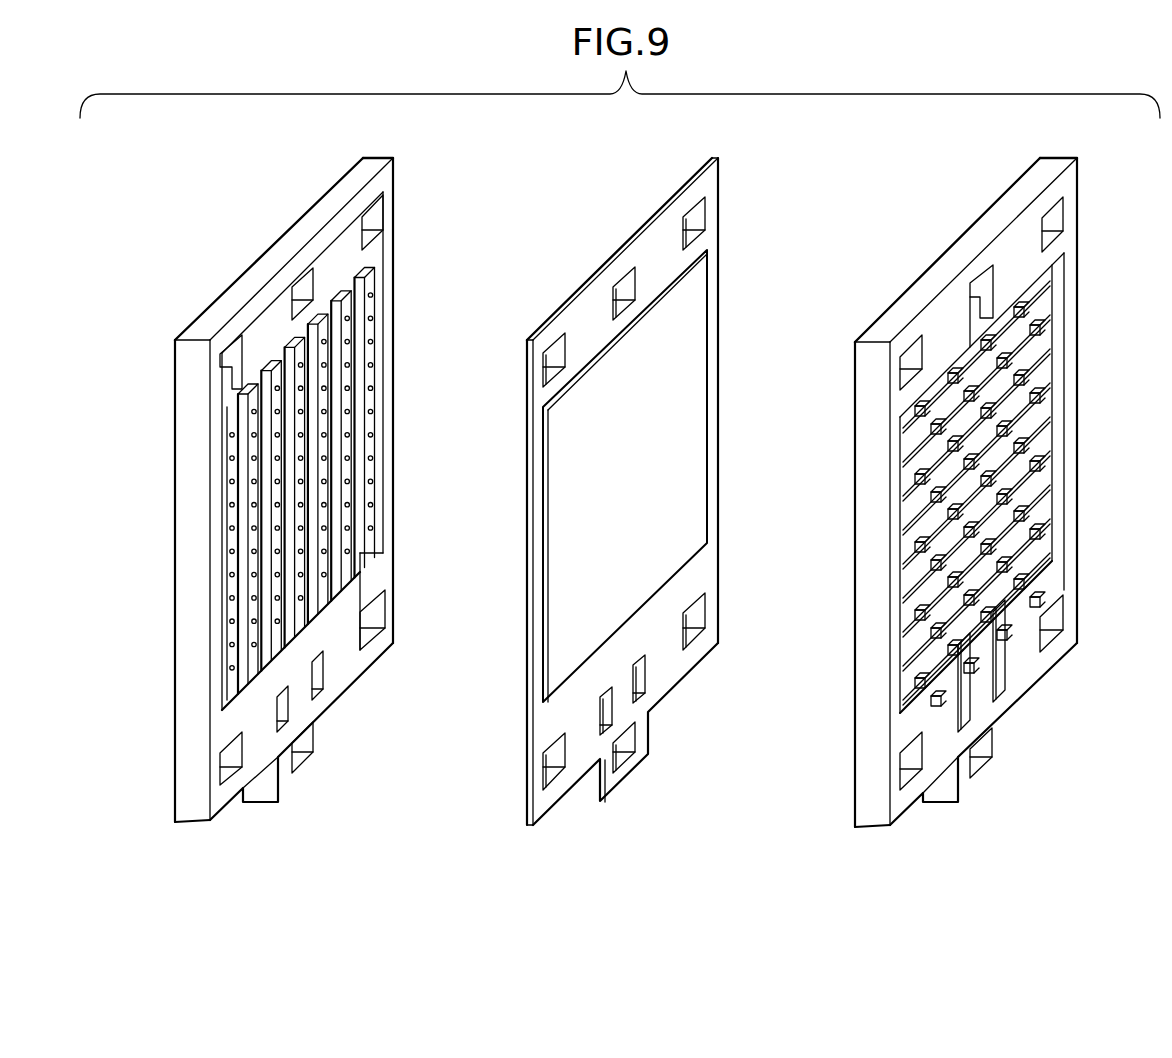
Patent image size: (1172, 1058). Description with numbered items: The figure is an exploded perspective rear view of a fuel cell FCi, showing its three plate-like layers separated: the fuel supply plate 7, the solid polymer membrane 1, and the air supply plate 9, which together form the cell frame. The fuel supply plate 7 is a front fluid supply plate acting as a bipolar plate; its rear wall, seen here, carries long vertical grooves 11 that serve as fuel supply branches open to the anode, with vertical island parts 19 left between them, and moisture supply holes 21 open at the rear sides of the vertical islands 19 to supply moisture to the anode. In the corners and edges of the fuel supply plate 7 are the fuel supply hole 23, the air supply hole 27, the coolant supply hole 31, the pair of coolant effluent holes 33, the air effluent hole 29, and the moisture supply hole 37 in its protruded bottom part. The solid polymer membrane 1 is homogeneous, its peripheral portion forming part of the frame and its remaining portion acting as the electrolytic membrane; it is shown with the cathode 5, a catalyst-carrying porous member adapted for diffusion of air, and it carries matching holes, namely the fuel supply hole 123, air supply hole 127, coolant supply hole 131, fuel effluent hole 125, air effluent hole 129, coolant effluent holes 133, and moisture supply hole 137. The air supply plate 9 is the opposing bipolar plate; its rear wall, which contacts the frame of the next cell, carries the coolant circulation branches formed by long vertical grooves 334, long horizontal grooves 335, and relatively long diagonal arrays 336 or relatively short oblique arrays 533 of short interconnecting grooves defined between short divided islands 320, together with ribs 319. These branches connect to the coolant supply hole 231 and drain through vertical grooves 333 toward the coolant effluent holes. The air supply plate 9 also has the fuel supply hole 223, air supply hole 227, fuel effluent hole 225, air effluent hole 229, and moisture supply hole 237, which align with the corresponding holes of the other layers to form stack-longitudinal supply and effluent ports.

The fuel cell FCi is at (190, 218).
The fuel supply plate 7 is at (262, 250).
The coolant supply hole 31 is at (300, 268).
The air supply hole 27 is at (380, 218).
The vertical island part 19 is at (228, 492).
The long vertical groove 11 is at (220, 560).
The moisture supply hole 21 is at (228, 640).
The fuel supply hole 23 is at (375, 622).
The coolant effluent hole 33 is at (318, 688).
The moisture supply hole 37 is at (300, 750).
The air effluent hole 29 is at (226, 770).
The solid polymer membrane 1 is at (590, 268).
The cathode 5 is at (724, 282).
The fuel effluent hole 125 is at (557, 360).
The coolant supply hole 131 is at (624, 292).
The air supply hole 127 is at (692, 232).
The air effluent hole 129 is at (552, 775).
The fuel supply hole 123 is at (698, 625).
The coolant effluent hole 133 is at (642, 680).
The moisture supply hole 137 is at (628, 752).
The air supply plate 9 is at (966, 220).
The rib 319 is at (1047, 318).
The short divided island 320 is at (905, 440).
The long vertical groove 334 is at (1045, 440).
The long horizontal groove 335 is at (1045, 480).
The relatively long diagonal array 336 is at (905, 385).
The relatively short oblique array 533 is at (1040, 405).
The air supply hole 227 is at (1060, 218).
The fuel effluent hole 225 is at (910, 348).
The coolant supply hole 231 is at (975, 295).
The fuel supply hole 223 is at (1057, 612).
The vertical groove 333 is at (997, 655).
The moisture supply hole 237 is at (985, 760).
The air effluent hole 229 is at (915, 775).